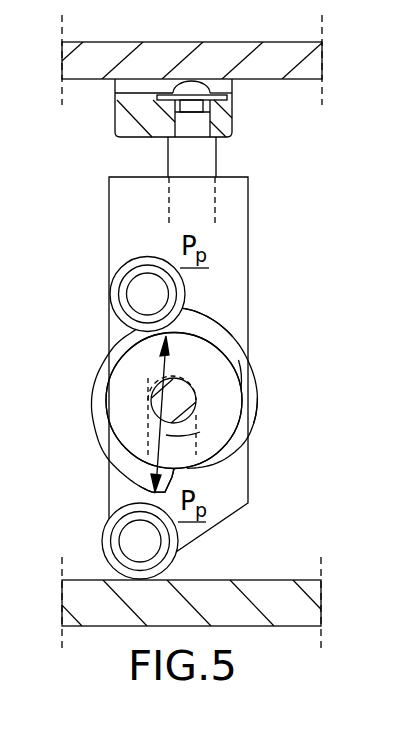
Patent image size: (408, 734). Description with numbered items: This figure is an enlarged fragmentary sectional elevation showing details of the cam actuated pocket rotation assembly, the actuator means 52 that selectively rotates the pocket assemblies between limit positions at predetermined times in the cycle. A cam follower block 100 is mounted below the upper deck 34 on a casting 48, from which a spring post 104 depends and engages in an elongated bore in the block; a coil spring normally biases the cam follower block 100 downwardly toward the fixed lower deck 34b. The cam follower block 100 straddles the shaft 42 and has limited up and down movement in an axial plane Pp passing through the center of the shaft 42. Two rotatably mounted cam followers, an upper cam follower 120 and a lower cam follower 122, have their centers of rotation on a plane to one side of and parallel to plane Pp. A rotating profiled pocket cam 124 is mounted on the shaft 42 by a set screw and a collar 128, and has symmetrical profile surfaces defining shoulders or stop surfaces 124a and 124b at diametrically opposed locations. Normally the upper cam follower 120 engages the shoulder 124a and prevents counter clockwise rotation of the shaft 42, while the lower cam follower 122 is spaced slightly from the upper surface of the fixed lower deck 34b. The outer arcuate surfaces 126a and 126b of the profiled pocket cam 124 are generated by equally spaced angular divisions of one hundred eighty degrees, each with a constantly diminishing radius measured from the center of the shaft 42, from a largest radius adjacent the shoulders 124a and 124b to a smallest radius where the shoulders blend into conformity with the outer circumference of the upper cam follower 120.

The upper deck 34 is at (233, 42).
The fixed lower deck 34b is at (269, 560).
The casting 48 is at (116, 110).
The spring post 104 is at (167, 153).
The actuator means 52 is at (281, 175).
The cam follower block 100 is at (235, 240).
The upper cam follower 120 is at (119, 270).
The lower cam follower 122 is at (113, 513).
The profiled pocket cam 124 is at (237, 349).
The shoulder 124a is at (200, 308).
The shoulder 124b is at (178, 480).
The outer arcuate surface 126a is at (104, 404).
The outer arcuate surface 126b is at (257, 408).
The collar 128 is at (241, 378).
The shaft 42 is at (152, 390).